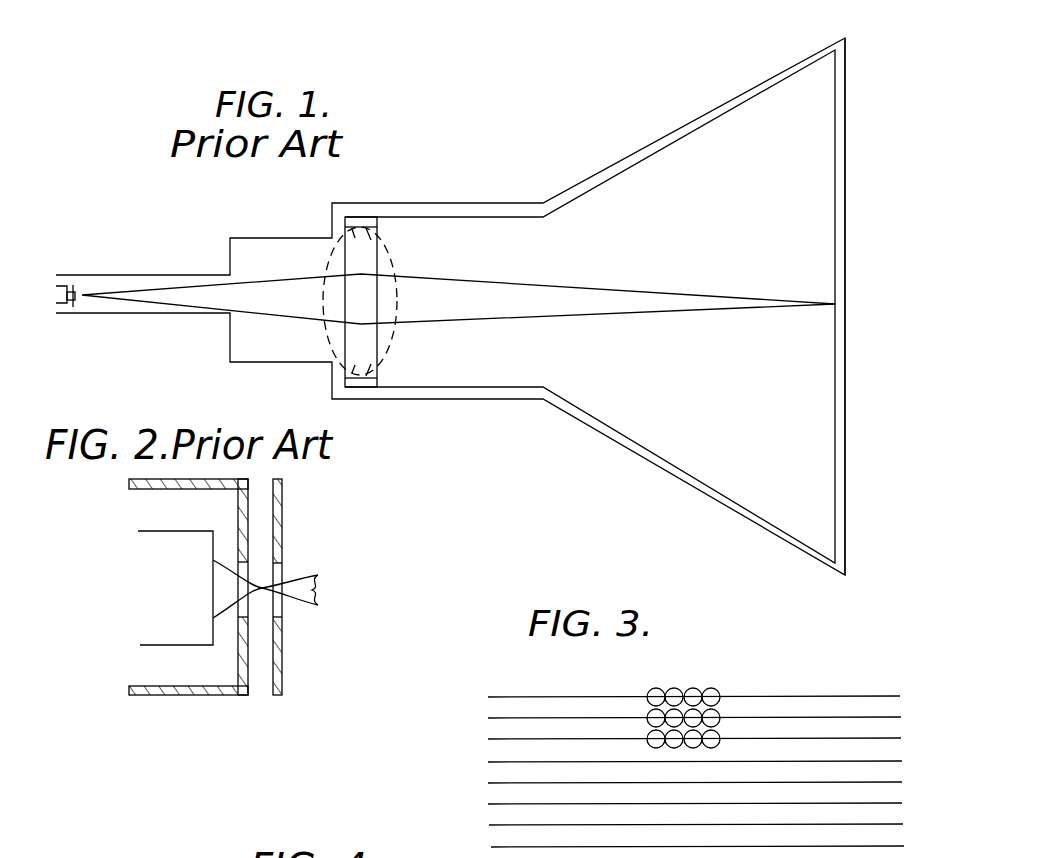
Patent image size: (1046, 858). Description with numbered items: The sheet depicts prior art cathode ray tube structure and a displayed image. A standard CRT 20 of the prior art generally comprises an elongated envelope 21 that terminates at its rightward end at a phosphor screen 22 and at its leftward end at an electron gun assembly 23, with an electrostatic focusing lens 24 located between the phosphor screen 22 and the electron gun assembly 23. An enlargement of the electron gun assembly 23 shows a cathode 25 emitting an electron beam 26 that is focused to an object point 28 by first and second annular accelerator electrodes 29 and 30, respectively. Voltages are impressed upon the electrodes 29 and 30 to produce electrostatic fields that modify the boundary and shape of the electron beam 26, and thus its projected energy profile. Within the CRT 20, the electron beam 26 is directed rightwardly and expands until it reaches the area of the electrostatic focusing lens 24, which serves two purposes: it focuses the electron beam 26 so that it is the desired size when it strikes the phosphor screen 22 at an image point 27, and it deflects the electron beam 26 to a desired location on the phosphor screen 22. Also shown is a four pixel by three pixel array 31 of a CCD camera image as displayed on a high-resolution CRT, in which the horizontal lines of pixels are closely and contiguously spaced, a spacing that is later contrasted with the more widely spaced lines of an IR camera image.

In FIG. 1, the CRT 20 is at (521, 88).
In FIG. 1, the elongated envelope 21 is at (492, 206).
In FIG. 1, the phosphor screen 22 is at (836, 370).
In FIG. 1, the electron gun assembly 23 is at (58, 287).
In FIG. 1, the electrostatic focusing lens 24 is at (370, 224).
In FIG. 2, the cathode 25 is at (192, 613).
In FIG. 1, the electron beam 26 is at (77, 295).
In FIG. 2, the electron beam 26 is at (318, 605).
In FIG. 1, the image point 27 is at (832, 302).
In FIG. 2, the object point 28 is at (265, 584).
In FIG. 2, the first annular accelerator electrode 29 is at (200, 697).
In FIG. 2, the second annular accelerator electrode 30 is at (284, 666).
In FIG. 3, the pixel array 31 is at (722, 690).